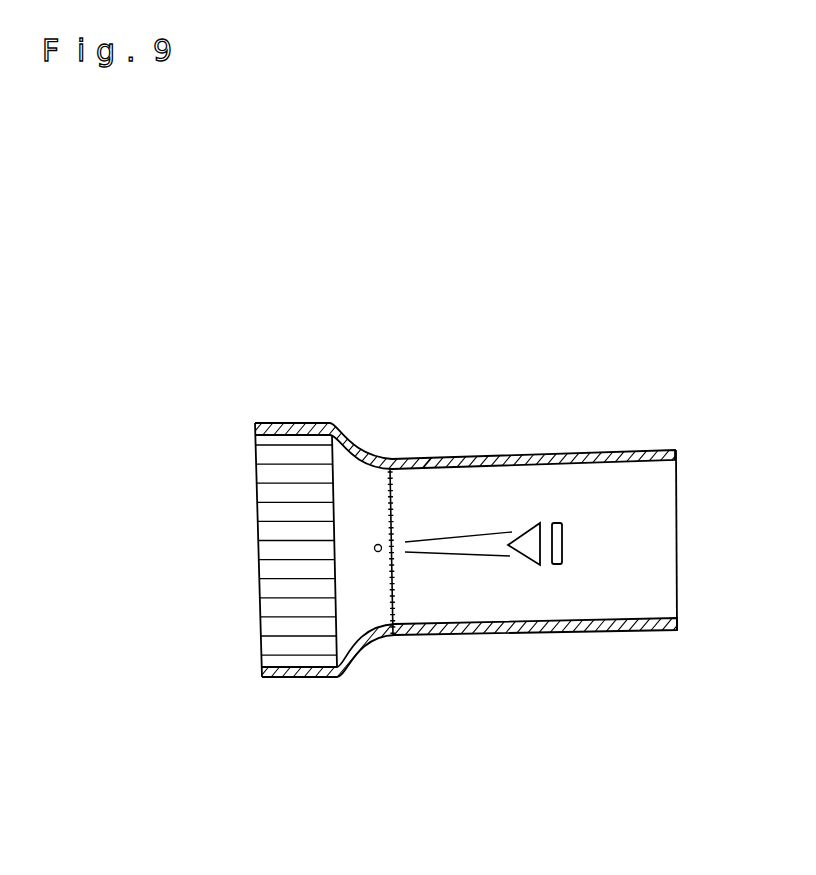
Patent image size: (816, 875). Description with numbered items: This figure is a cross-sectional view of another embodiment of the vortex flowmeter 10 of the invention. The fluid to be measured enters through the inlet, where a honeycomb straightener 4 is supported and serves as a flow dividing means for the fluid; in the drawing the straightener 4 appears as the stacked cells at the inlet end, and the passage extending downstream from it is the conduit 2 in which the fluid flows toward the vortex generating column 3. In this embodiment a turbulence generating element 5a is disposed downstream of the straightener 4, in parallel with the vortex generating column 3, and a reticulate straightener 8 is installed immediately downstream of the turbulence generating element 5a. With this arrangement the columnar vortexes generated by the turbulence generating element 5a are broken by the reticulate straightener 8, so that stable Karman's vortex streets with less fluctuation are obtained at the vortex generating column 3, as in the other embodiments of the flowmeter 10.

The sub-conduit 2 is at (522, 455).
The vortex generating column 3 is at (530, 570).
The honeycomb straightener 4 is at (258, 573).
The turbulence generating element 5a is at (378, 553).
The reticulate straightener 8 is at (390, 487).
The vortex flowmeter 10 is at (305, 693).